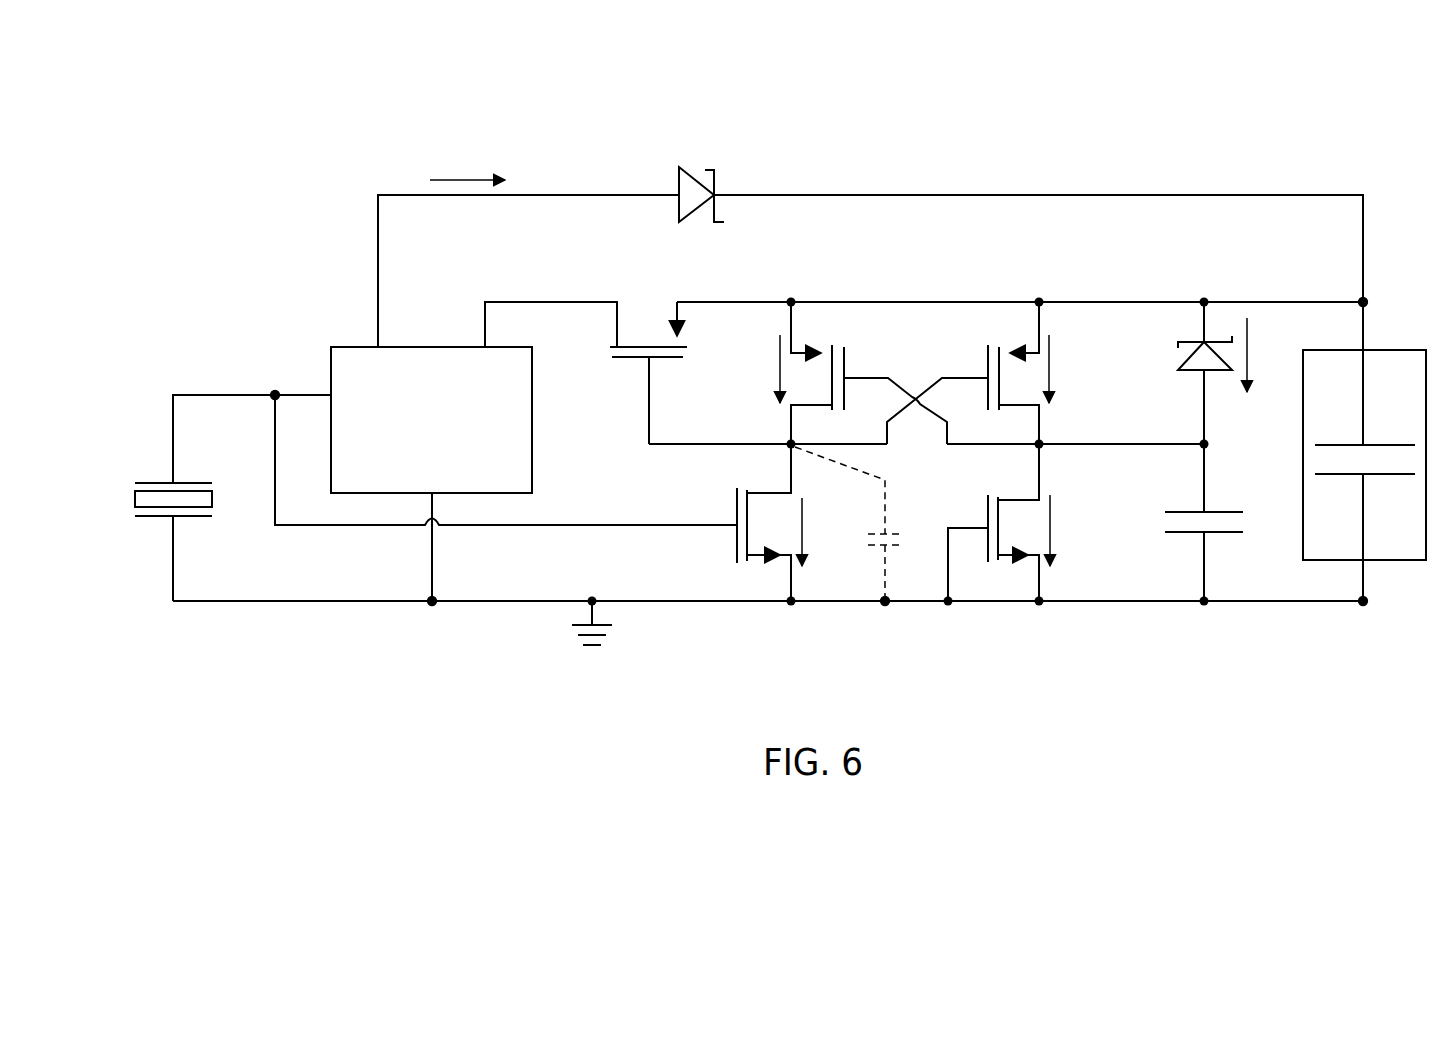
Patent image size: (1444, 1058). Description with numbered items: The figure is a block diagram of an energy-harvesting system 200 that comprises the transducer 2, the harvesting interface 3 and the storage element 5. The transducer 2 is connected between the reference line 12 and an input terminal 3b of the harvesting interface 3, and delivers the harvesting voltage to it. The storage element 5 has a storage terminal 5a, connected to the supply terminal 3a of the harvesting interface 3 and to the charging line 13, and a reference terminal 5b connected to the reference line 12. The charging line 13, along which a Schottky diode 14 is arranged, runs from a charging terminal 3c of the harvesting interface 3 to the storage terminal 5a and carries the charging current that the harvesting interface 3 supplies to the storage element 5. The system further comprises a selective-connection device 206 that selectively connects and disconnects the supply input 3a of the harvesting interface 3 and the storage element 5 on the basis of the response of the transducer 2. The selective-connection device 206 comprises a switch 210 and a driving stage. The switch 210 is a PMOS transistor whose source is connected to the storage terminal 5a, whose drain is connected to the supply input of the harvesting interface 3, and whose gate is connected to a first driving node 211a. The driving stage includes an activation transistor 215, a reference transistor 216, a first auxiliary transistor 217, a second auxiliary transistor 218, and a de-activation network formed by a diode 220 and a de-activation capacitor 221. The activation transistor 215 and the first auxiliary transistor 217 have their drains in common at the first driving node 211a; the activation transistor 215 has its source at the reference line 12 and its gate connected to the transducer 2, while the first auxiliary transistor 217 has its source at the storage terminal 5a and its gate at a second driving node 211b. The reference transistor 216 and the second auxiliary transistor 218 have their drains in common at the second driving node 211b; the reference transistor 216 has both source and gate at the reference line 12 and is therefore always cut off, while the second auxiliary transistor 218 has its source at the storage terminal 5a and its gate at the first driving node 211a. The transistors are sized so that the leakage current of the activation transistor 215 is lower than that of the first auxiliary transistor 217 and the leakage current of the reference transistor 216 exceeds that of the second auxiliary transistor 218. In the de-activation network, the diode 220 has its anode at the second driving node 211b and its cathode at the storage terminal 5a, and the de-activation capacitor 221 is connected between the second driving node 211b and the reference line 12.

The energy-harvesting system 200 is at (1203, 120).
The transducer 2 is at (135, 488).
The harvesting interface 3 is at (533, 473).
The supply terminal 3a is at (490, 325).
The input terminal 3b is at (277, 392).
The charging terminal 3c is at (378, 262).
The Schottky diode 14 is at (678, 181).
The charging line 13 is at (845, 194).
The selective-connection device 206 is at (887, 262).
The switch 210 is at (650, 332).
The first auxiliary transistor 217 is at (850, 355).
The second auxiliary transistor 218 is at (986, 360).
The first driving node 211a is at (788, 448).
The second driving node 211b is at (1042, 447).
The activation transistor 215 is at (735, 540).
The reference transistor 216 is at (985, 511).
The diode 220 is at (1186, 340).
The de-activation capacitor 221 is at (1178, 536).
The storage element 5 is at (1403, 362).
The storage terminal 5a is at (1366, 300).
The reference terminal 5b is at (1368, 598).
The reference line 12 is at (841, 603).